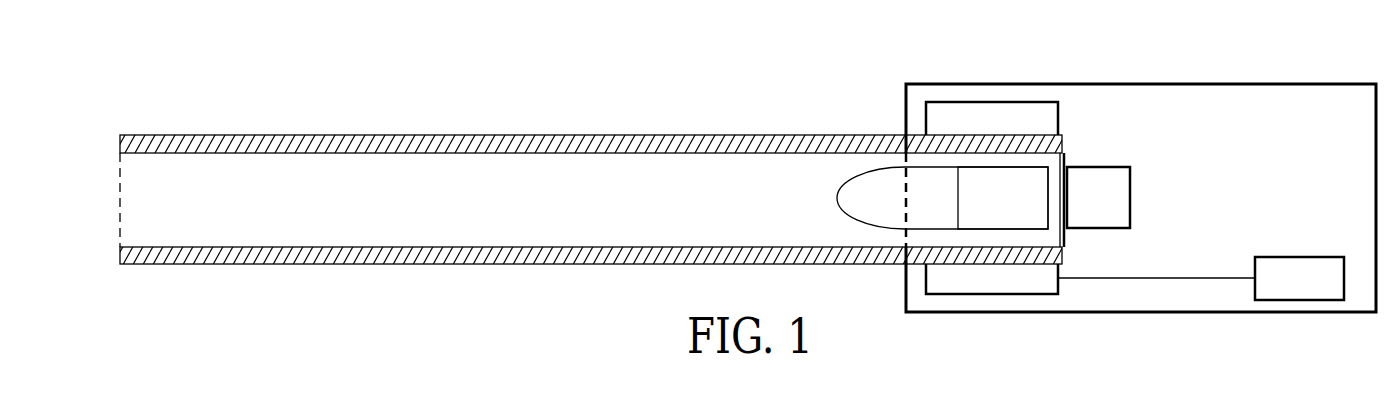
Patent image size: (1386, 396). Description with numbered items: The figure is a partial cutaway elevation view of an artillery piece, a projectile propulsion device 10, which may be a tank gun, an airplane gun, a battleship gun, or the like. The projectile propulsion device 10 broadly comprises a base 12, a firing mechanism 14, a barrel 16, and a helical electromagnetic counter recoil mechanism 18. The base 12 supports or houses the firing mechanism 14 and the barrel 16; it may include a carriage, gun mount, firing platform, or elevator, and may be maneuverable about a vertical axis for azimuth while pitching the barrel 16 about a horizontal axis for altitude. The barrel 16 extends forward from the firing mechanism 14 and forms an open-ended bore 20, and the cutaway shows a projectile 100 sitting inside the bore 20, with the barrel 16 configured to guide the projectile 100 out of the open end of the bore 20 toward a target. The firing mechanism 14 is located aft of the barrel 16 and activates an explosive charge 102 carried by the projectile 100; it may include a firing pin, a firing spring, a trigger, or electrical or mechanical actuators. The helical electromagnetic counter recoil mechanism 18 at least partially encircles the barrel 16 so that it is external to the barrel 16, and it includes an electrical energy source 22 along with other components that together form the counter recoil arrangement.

The projectile propulsion device 10 is at (146, 92).
The base 12 is at (1288, 84).
The firing mechanism 14 is at (1108, 177).
The barrel 16 is at (403, 134).
The helical electromagnetic counter recoil mechanism 18 is at (1018, 115).
The open-ended bore 20 is at (567, 174).
The electrical energy source 22 is at (1299, 283).
The projectile 100 is at (872, 183).
The explosive charge 102 is at (1022, 210).